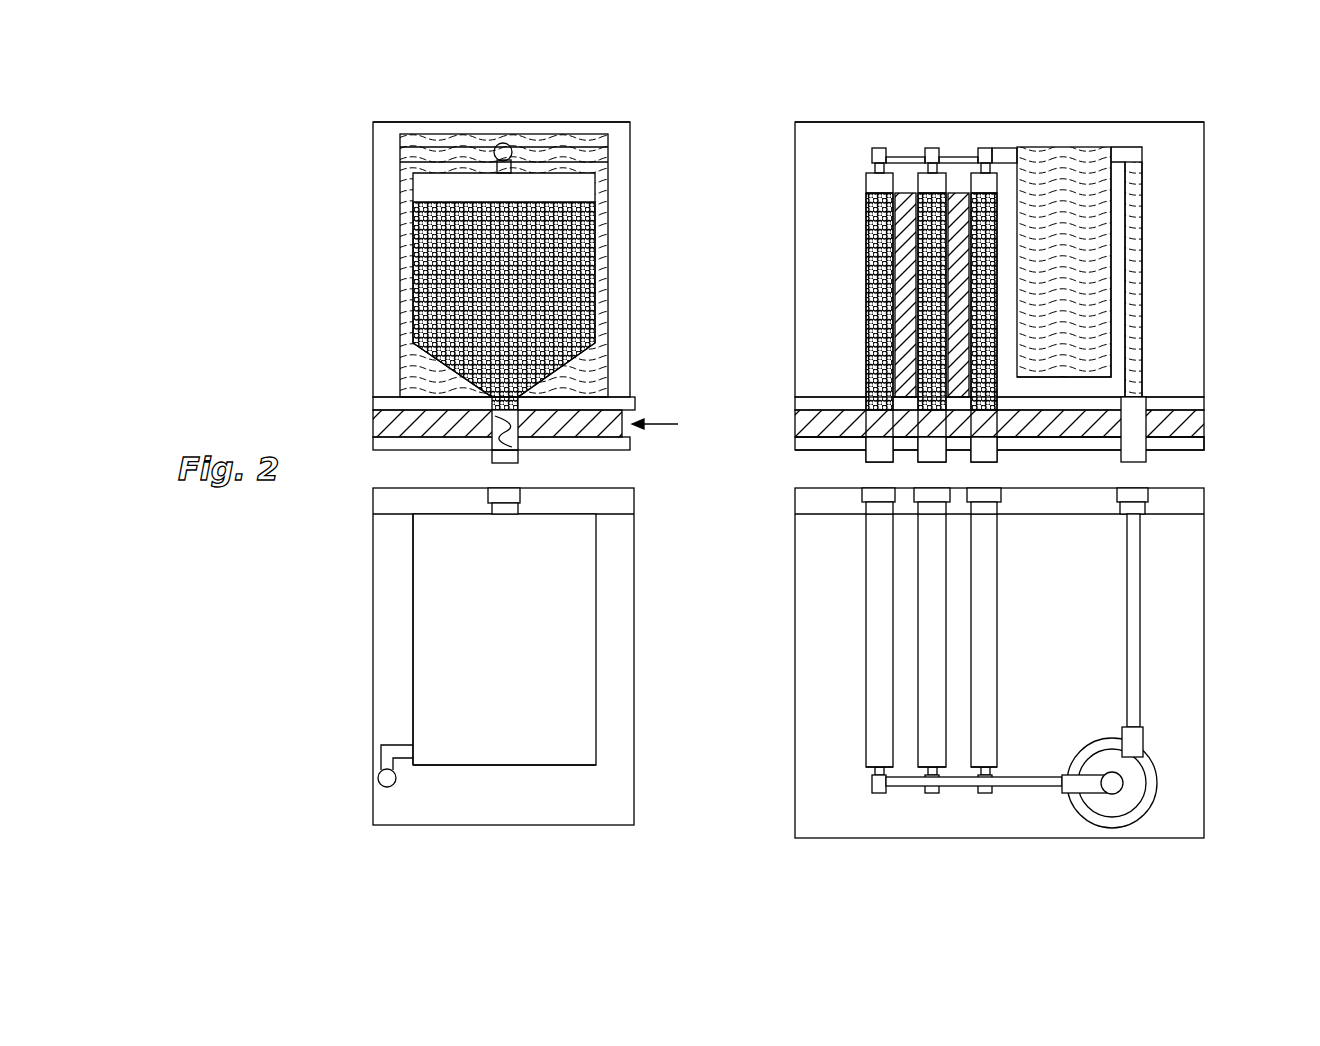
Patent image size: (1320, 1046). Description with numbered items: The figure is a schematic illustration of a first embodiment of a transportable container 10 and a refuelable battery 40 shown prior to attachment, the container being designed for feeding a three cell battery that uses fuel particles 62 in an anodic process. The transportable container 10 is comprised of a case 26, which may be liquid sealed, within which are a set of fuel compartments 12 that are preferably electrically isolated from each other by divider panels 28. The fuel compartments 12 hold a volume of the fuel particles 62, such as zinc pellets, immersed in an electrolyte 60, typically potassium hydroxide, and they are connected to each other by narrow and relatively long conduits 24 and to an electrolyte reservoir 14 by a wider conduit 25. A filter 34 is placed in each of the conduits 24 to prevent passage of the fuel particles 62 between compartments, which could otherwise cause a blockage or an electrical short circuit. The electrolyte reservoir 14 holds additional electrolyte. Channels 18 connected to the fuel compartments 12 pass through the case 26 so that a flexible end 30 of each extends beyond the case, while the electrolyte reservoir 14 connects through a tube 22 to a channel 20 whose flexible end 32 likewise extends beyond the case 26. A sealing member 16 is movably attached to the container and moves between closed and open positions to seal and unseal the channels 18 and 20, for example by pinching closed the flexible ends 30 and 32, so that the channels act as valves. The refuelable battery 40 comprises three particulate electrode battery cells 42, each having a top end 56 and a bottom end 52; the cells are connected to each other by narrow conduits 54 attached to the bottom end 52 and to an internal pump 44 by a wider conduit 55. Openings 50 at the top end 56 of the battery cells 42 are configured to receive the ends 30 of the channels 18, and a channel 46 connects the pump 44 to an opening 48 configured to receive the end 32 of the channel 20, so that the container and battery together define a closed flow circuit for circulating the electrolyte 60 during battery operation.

The transportable container 10 is at (638, 144).
The fuel compartments 12 is at (600, 243).
The electrolyte reservoir 14 is at (1112, 262).
The sealing member 16 is at (580, 423).
The channels 18 is at (510, 455).
The channel 20 is at (1147, 452).
The tube 22 is at (1145, 298).
The conduits 24 is at (908, 157).
The wider conduit 25 is at (1005, 157).
The case 26 is at (405, 122).
The divider panels 28 is at (905, 193).
The end 30 is at (505, 463).
The end 32 is at (1130, 465).
The filter 34 is at (878, 158).
The refuelable battery 40 is at (640, 733).
The particulate electrode battery cells 42 is at (413, 604).
The pump 44 is at (1150, 800).
The channel 46 is at (1140, 660).
The opening 48 is at (1130, 492).
The openings 50 is at (520, 495).
The bottom end 52 is at (483, 768).
The conduits 54 is at (380, 748).
The wider conduit 55 is at (1040, 790).
The top end 56 is at (413, 530).
The electrolyte 60 is at (425, 185).
The fuel particles 62 is at (412, 225).